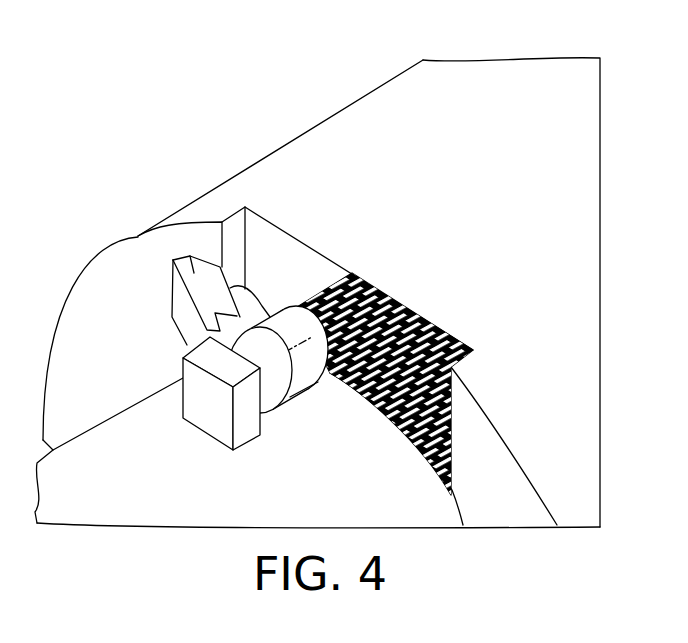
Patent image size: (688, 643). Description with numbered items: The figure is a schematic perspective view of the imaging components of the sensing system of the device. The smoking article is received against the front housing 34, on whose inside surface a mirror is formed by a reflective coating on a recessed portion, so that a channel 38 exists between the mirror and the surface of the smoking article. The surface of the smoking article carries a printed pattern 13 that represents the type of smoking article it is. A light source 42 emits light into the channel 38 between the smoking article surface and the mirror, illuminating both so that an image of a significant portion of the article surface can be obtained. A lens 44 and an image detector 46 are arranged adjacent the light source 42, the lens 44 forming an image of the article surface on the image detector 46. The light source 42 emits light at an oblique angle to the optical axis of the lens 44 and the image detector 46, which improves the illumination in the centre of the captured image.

The printed pattern 13 is at (397, 428).
The front housing 34 is at (300, 162).
The channel 38 is at (408, 313).
The light source 42 is at (175, 259).
The lens 44 is at (275, 402).
The image detector 46 is at (208, 421).